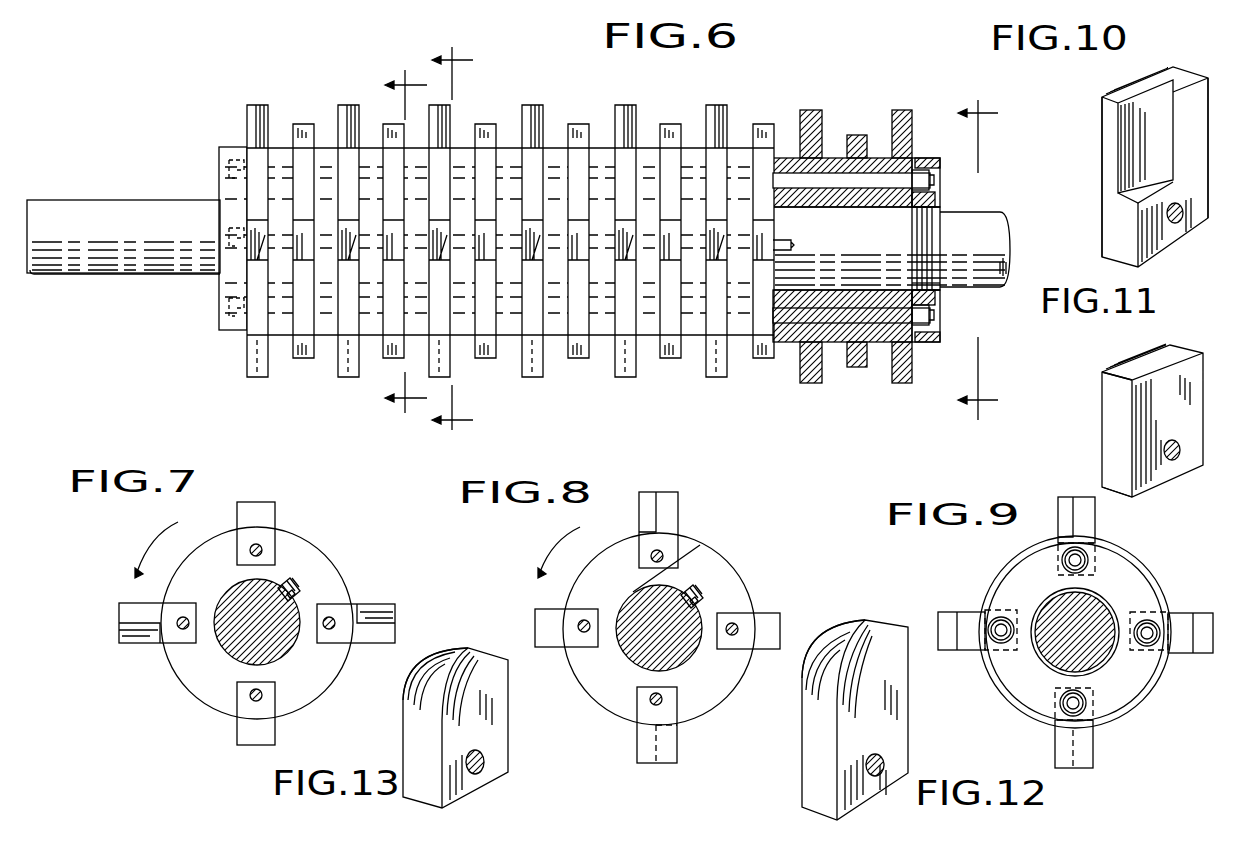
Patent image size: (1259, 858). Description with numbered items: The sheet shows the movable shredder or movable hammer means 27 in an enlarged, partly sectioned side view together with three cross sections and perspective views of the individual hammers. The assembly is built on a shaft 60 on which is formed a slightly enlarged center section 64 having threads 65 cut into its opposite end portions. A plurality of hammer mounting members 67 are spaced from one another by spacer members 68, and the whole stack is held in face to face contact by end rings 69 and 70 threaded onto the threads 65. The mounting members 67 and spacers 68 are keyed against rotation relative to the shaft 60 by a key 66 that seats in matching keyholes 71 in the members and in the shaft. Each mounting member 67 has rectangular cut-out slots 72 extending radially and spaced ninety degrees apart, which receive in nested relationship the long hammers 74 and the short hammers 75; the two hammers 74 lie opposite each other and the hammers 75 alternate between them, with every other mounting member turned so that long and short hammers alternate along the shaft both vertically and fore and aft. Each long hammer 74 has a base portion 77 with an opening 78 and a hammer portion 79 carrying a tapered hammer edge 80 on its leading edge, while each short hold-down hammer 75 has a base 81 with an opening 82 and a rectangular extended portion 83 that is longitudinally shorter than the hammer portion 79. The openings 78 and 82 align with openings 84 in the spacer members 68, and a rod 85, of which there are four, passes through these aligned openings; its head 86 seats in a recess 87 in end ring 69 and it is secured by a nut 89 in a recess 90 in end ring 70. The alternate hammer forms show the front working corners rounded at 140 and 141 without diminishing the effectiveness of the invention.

In FIG. 6, the movable hammer means 27 is at (578, 126).
In FIG. 6, the shaft 60 is at (990, 216).
In FIG. 7, the shaft 60 is at (232, 592).
In FIG. 8, the shaft 60 is at (636, 592).
In FIG. 9, the shaft 60 is at (1095, 655).
In FIG. 6, the enlarged center section 64 is at (940, 210).
In FIG. 6, the threads 65 is at (942, 283).
In FIG. 7, the key 66 is at (290, 598).
In FIG. 8, the key 66 is at (695, 590).
In FIG. 6, the hammer mounting member 67 is at (307, 193).
In FIG. 7, the hammer mounting member 67 is at (333, 586).
In FIG. 8, the hammer mounting member 67 is at (700, 545).
In FIG. 6, the spacer member 68 is at (277, 147).
In FIG. 6, the end ring 69 is at (230, 148).
In FIG. 6, the end ring 70 is at (925, 160).
In FIG. 9, the end ring 70 is at (1027, 570).
In FIG. 7, the keyhole 71 is at (292, 590).
In FIG. 8, the keyhole 71 is at (700, 598).
In FIG. 7, the cut-out slot 72 is at (275, 706).
In FIG. 8, the cut-out slot 72 is at (588, 645).
In FIG. 6, the hammer 74 is at (263, 105).
In FIG. 7, the hammer 74 is at (364, 632).
In FIG. 8, the hammer 74 is at (683, 492).
In FIG. 9, the hammer 74 is at (1205, 648).
In FIG. 10, the hammer 74 is at (1189, 166).
In FIG. 12, the hammer 74 is at (848, 640).
In FIG. 6, the hammer 75 is at (303, 124).
In FIG. 7, the hammer 75 is at (258, 512).
In FIG. 8, the hammer 75 is at (772, 614).
In FIG. 9, the hammer 75 is at (1180, 614).
In FIG. 11, the hammer 75 is at (1191, 374).
In FIG. 13, the hammer 75 is at (497, 755).
In FIG. 10, the base portion 77 is at (1102, 228).
In FIG. 6, the opening 78 is at (805, 350).
In FIG. 10, the opening 78 is at (1182, 223).
In FIG. 10, the hammer portion 79 is at (1193, 120).
In FIG. 10, the tapered hammer edge 80 is at (1102, 150).
In FIG. 11, the base 81 is at (1102, 468).
In FIG. 6, the opening 82 is at (858, 345).
In FIG. 11, the opening 82 is at (1176, 462).
In FIG. 11, the extended portion 83 is at (1102, 398).
In FIG. 6, the opening 84 is at (833, 350).
In FIG. 6, the rod 85 is at (780, 178).
In FIG. 7, the rod 85 is at (260, 548).
In FIG. 8, the rod 85 is at (670, 700).
In FIG. 9, the rod 85 is at (1088, 558).
In FIG. 6, the head 86 is at (240, 315).
In FIG. 6, the recess 87 is at (240, 300).
In FIG. 6, the nut 89 is at (915, 340).
In FIG. 9, the nut 89 is at (1092, 572).
In FIG. 6, the recess 90 is at (930, 315).
In FIG. 12, the rounded corner 140 is at (826, 668).
In FIG. 13, the rounded corner 141 is at (435, 675).